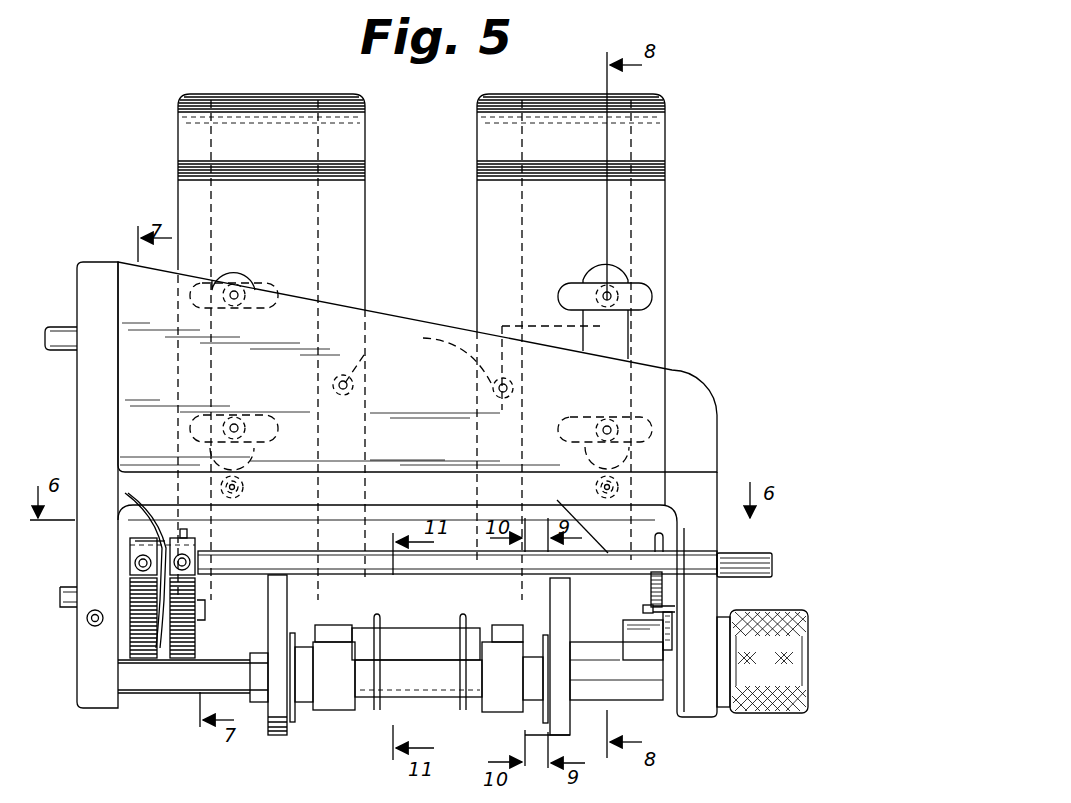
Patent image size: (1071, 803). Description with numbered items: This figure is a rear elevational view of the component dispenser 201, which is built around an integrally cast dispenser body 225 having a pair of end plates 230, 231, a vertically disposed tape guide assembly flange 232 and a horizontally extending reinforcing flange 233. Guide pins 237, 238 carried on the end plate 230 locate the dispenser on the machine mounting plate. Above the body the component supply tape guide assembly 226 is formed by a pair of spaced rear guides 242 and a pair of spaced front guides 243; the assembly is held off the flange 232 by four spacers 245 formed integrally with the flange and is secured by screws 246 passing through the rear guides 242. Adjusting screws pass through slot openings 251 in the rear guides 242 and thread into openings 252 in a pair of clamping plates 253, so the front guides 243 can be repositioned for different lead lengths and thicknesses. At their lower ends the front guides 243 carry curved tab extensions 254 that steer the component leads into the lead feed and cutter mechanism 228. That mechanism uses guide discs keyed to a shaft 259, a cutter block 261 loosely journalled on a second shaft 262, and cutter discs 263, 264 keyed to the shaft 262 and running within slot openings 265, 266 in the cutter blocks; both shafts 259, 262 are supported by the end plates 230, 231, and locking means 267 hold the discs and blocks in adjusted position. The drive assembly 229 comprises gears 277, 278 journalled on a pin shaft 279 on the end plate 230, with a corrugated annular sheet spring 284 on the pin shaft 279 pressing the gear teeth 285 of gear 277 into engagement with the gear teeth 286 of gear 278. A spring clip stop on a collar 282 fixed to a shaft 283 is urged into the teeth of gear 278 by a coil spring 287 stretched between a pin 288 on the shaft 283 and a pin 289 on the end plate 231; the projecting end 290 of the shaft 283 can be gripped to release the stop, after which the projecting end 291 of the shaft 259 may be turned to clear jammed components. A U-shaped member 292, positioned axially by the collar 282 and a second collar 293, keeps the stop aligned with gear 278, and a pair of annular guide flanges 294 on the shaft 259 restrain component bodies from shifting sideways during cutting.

The dispenser 201 is at (680, 192).
The dispenser body 225 is at (718, 391).
The component supply tape guide assembly 226 is at (652, 255).
The component lead feed and cutter mechanism 228 is at (300, 738).
The feed and cutter mechanism drive assembly 229 is at (184, 688).
The end plate 230 is at (93, 262).
The end plate 231 is at (717, 473).
The tape guide assembly flange 232 is at (692, 372).
The reinforcing flange 233 is at (275, 475).
The guide pin 237 is at (65, 596).
The guide pin 238 is at (62, 328).
The rear guide 242 is at (366, 143).
The front guide 243 is at (262, 108).
The spacer 245 is at (723, 432).
The screw 246 is at (347, 385).
The slot opening 251 is at (293, 250).
The opening 252 is at (605, 295).
The clamping plate 253 is at (233, 268).
The tab extension 254 is at (523, 590).
The shaft 259 is at (426, 650).
The cutter block 261 is at (292, 713).
The shaft 262 is at (398, 688).
The cutter disc 263 is at (543, 680).
The cutter disc 264 is at (295, 700).
The slot opening 265 is at (548, 672).
The slot opening 266 is at (295, 675).
The locking means 267 is at (352, 610).
The gear 277 is at (128, 652).
The gear 278 is at (185, 652).
The pin shaft 279 is at (200, 612).
The collar 282 is at (190, 546).
The shaft 283 is at (277, 556).
The corrugated annular sheet spring 284 is at (130, 632).
The gear teeth 285 is at (165, 656).
The gear teeth 286 is at (190, 632).
The coil spring 287 is at (651, 590).
The pin 288 is at (663, 543).
The pin 289 is at (643, 609).
The projecting end of shaft 290 is at (772, 564).
The projecting end of shaft 291 is at (829, 602).
The U-shaped member 292 is at (124, 565).
The collar 293 is at (137, 541).
The annular guide flange 294 is at (416, 608).